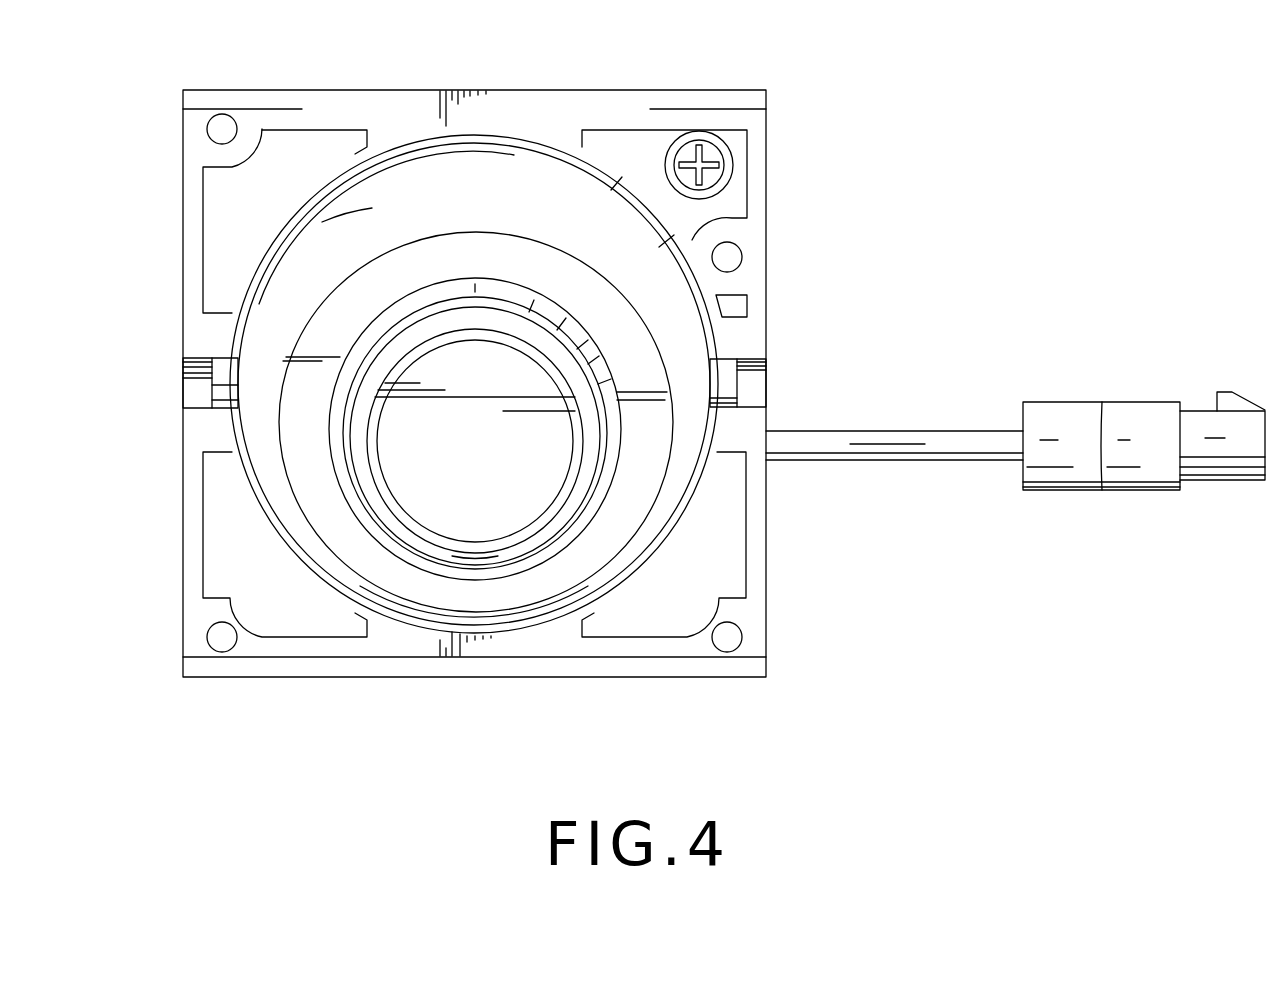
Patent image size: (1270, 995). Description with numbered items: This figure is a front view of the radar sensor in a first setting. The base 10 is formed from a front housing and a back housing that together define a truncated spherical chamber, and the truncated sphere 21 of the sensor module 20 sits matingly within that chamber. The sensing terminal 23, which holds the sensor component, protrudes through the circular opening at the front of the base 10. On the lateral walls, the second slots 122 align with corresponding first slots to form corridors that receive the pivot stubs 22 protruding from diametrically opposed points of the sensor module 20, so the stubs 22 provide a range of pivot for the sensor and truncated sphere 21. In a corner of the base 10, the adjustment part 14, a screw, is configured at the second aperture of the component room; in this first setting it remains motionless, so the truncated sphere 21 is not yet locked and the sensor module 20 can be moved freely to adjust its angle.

The base 10 is at (505, 68).
The adjustment part 14 is at (712, 158).
The sensor module 20 is at (430, 615).
The truncated sphere 21 is at (445, 157).
The pivot stubs 22 is at (728, 391).
The second slots 122 is at (764, 381).
The sensing terminal 23 is at (500, 530).